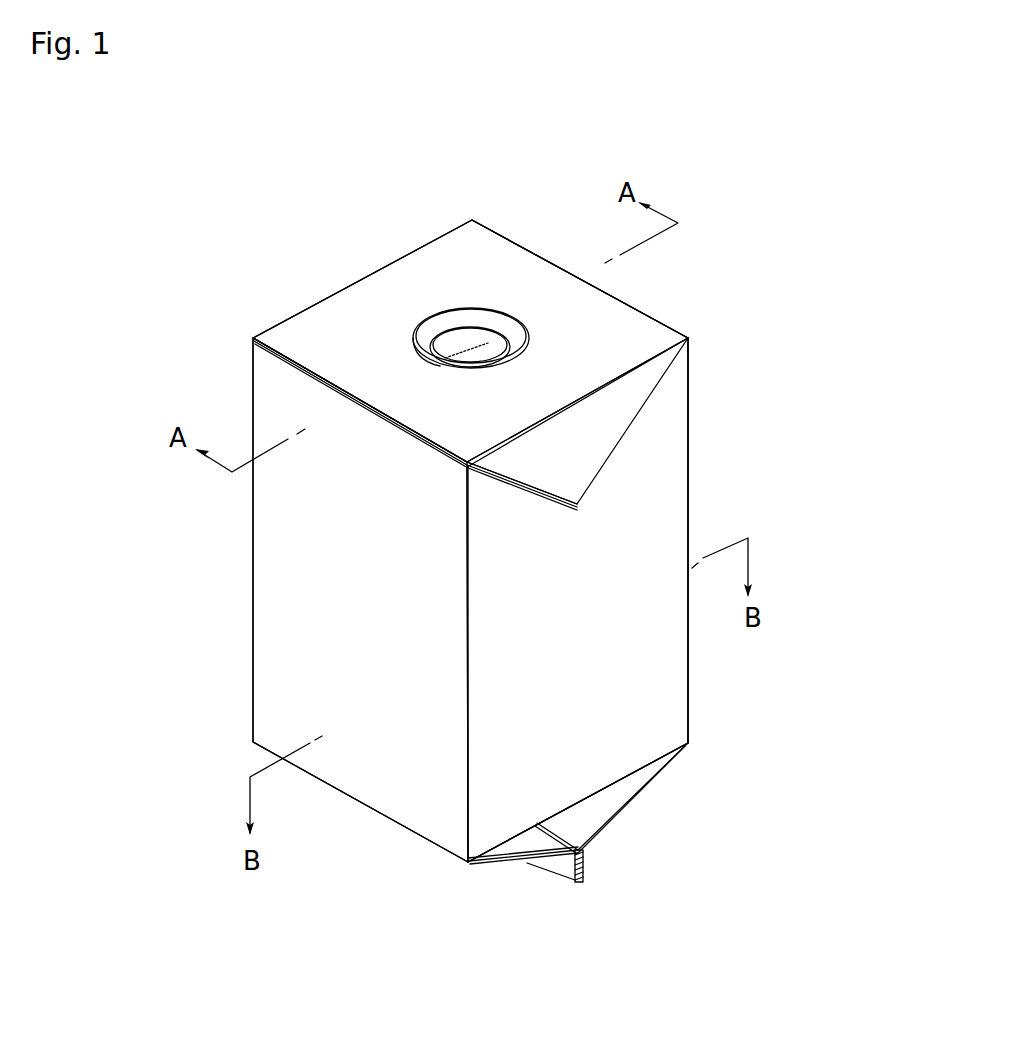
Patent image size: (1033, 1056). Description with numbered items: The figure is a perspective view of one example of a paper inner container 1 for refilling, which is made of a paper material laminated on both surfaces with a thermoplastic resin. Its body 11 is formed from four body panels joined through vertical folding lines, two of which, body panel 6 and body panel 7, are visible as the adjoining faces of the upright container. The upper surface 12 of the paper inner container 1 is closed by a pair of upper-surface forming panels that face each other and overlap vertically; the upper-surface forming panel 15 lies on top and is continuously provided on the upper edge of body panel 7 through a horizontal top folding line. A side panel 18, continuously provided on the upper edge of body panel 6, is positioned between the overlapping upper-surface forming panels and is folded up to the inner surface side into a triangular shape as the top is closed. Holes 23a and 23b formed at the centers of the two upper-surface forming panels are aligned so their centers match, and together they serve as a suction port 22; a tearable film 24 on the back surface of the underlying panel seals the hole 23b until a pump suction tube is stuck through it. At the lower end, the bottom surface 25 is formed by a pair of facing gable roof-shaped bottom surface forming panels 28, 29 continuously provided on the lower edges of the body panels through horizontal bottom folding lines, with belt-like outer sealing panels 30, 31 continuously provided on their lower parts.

The paper inner container 1 is at (699, 369).
The body panel 6 is at (673, 445).
The body panel 7 is at (275, 555).
The body 11 is at (692, 502).
The upper surface 12 is at (627, 327).
The upper-surface forming panel 15 is at (325, 318).
The side panel 18 is at (570, 487).
The suction port 22 is at (458, 372).
The hole 23a is at (488, 308).
The hole 23b is at (411, 328).
The film 24 is at (461, 342).
The bottom surface 25 is at (639, 801).
The bottom surface forming panel 28 is at (636, 781).
The bottom surface forming panel 29 is at (519, 848).
The outer sealing panel 30 is at (585, 856).
The outer sealing panel 31 is at (560, 872).